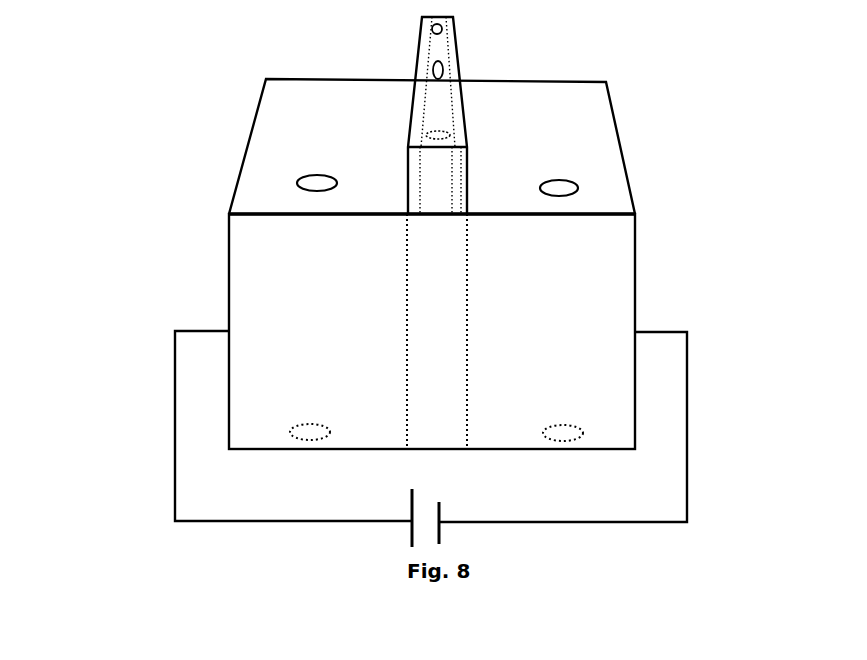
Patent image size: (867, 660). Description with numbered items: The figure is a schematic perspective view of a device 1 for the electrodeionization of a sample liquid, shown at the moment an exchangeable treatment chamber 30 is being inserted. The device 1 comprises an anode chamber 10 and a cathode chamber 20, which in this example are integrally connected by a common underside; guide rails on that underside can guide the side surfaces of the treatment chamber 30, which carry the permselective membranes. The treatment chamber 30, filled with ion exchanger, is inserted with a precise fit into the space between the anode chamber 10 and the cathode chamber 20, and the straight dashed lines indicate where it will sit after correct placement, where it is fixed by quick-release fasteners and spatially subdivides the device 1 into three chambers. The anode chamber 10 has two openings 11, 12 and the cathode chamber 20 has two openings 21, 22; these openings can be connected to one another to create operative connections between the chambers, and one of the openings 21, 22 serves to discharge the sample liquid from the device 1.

The device 1 is at (160, 80).
The anode chamber 10 is at (242, 136).
The cathode chamber 20 is at (626, 133).
The treatment chamber 30 is at (466, 46).
The opening 11 is at (316, 200).
The opening 12 is at (313, 417).
The opening 21 is at (561, 205).
The opening 22 is at (562, 423).